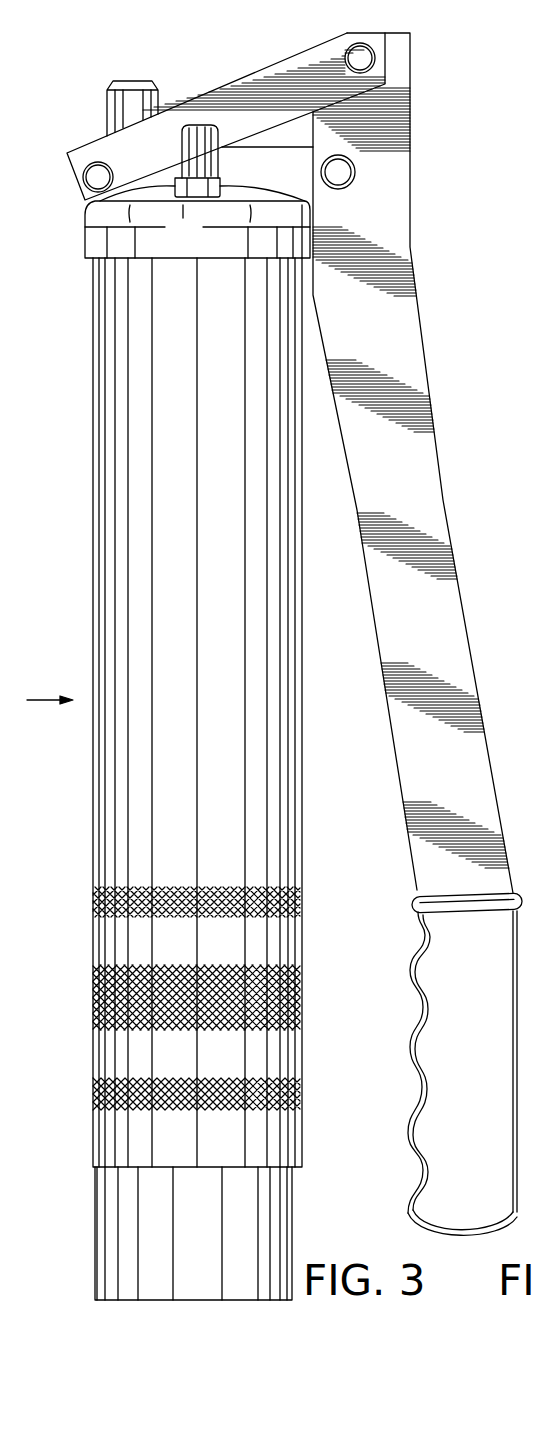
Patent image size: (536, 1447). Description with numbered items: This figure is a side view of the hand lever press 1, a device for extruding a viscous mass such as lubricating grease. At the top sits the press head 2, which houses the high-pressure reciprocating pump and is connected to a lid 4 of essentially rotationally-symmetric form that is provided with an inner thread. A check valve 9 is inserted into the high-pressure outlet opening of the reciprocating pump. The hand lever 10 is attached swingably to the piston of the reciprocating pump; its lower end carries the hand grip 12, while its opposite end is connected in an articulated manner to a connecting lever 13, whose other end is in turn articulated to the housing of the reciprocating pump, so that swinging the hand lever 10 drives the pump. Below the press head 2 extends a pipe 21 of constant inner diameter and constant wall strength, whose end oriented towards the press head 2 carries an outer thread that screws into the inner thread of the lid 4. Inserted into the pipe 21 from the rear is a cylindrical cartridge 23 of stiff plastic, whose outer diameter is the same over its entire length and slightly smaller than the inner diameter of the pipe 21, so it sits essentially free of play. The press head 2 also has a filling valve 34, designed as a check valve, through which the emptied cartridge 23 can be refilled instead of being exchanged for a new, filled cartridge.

The hand lever press 1 is at (441, 41).
The press head 2 is at (68, 219).
The lid 4 is at (102, 236).
The check valve 9 is at (156, 76).
The hand lever 10 is at (463, 627).
The hand grip 12 is at (428, 1098).
The connecting lever 13 is at (297, 63).
The pipe 21 is at (103, 813).
The cartridge 23 is at (107, 1228).
The filling valve 34 is at (217, 111).